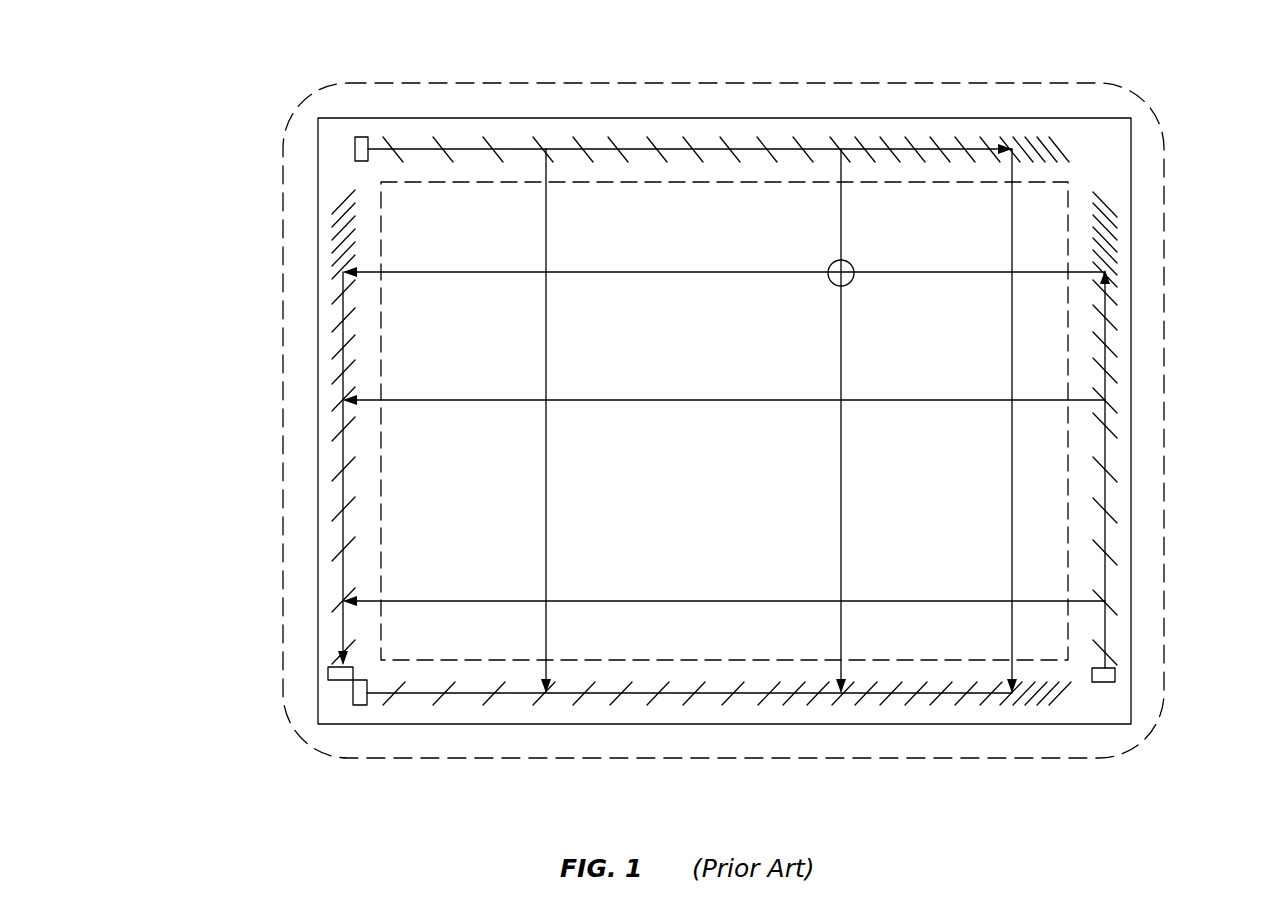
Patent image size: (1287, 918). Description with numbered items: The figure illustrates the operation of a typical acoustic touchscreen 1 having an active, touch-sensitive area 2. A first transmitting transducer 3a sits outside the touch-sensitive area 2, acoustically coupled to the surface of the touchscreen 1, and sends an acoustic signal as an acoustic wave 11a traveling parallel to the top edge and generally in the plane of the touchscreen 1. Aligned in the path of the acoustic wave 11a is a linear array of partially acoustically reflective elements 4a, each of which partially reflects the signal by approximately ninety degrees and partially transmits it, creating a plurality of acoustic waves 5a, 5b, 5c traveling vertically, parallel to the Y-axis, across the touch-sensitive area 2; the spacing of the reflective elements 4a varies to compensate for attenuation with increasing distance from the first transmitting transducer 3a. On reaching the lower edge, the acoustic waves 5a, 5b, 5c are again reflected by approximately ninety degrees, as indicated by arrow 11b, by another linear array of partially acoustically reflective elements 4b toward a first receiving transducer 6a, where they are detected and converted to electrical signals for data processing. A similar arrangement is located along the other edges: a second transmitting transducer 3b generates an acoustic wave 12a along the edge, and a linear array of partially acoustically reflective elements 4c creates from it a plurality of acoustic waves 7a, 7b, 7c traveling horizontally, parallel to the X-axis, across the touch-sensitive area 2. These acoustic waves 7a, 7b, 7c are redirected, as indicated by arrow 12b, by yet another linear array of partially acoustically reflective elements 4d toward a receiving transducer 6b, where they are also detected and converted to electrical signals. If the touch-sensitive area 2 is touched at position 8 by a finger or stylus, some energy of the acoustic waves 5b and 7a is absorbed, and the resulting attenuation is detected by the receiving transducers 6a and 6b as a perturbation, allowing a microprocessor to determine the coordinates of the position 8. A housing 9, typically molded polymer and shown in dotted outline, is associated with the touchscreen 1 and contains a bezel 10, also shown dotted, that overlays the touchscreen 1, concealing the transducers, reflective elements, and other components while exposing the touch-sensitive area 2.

The acoustic touchscreen 1 is at (1065, 724).
The touch-sensitive area 2 is at (1043, 455).
The first transmitting transducer 3a is at (355, 150).
The second transmitting transducer 3b is at (1115, 675).
The partially acoustically reflective elements 4a is at (489, 150).
The partially acoustically reflective elements 4b is at (758, 702).
The partially acoustically reflective elements 4c is at (1106, 513).
The partially acoustically reflective elements 4d is at (335, 380).
The acoustic wave 5a is at (546, 512).
The acoustic wave 5b is at (841, 510).
The acoustic wave 5c is at (1011, 360).
The first receiving transducer 6a is at (350, 692).
The receiving transducer 6b is at (328, 672).
The acoustic wave 7a is at (417, 272).
The acoustic wave 7b is at (433, 400).
The acoustic wave 7c is at (468, 601).
The position 8 is at (834, 262).
The housing 9 is at (282, 460).
The bezel 10 is at (1068, 198).
The acoustic wave 11a is at (710, 149).
The arrow 11b is at (710, 695).
The acoustic wave 12a is at (1106, 593).
The arrow 12b is at (343, 580).